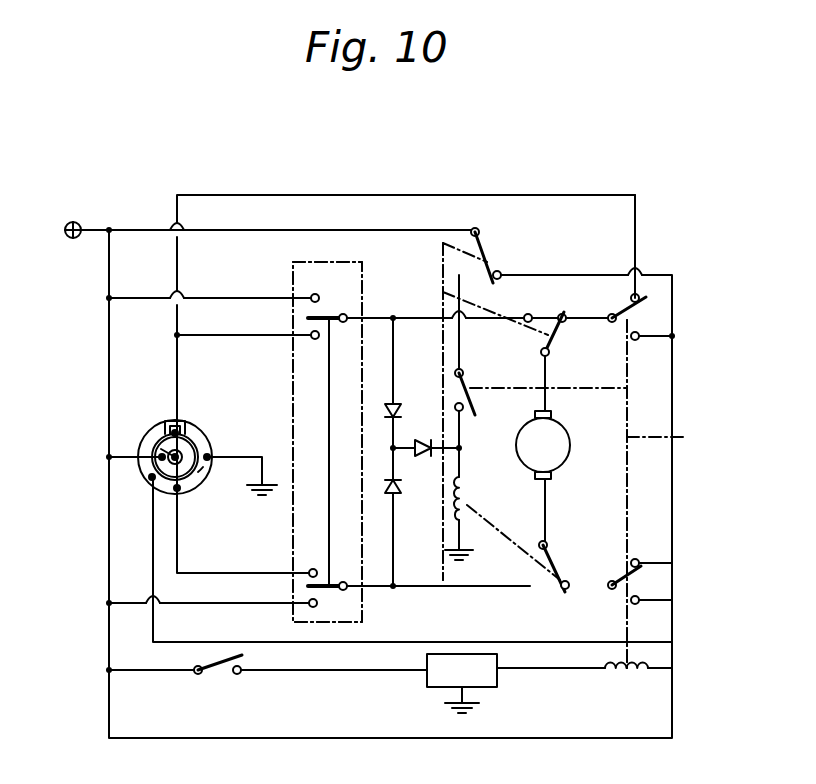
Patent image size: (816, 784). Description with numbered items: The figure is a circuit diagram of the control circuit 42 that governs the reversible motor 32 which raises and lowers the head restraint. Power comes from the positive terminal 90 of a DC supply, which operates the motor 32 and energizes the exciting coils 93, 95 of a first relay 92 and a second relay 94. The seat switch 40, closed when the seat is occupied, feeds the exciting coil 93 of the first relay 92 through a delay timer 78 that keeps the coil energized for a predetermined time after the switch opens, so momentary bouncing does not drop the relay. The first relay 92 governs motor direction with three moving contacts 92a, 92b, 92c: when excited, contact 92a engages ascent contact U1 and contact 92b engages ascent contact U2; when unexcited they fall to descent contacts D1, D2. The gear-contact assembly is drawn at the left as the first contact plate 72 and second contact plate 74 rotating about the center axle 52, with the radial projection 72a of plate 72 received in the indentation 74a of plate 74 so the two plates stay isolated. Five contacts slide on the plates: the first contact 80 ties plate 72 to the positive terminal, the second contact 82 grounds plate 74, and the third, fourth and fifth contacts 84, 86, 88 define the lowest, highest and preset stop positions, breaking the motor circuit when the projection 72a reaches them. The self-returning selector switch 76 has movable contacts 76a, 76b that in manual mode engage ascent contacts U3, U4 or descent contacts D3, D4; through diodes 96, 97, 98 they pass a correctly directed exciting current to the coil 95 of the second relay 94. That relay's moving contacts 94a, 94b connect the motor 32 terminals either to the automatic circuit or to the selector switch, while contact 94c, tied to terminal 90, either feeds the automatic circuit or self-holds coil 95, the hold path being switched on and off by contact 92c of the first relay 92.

The positive terminal 90 is at (73, 240).
The first contact 80 is at (140, 444).
The first contact plate 72 is at (200, 447).
The center axle 52 is at (185, 452).
The radial projection 72a is at (170, 424).
The radial indentation 74a is at (188, 430).
The third contact 84 is at (162, 450).
The second contact 82 is at (210, 462).
The fifth contact 88 is at (152, 480).
The fourth contact 86 is at (178, 491).
The second contact plate 74 is at (200, 478).
The selector switch 76 is at (362, 283).
The movable contact 76a is at (330, 316).
The movable contact 76b is at (326, 590).
The ascent contact U3 is at (312, 295).
The descent contact D3 is at (313, 339).
The ascent contact U4 is at (312, 569).
The descent contact D4 is at (310, 606).
The diode 96 is at (401, 414).
The diode 98 is at (424, 460).
The diode 97 is at (401, 495).
The exciting coil 95 is at (454, 510).
The second relay 94 is at (443, 378).
The first moving contact 94a is at (543, 342).
The second moving contact 94b is at (553, 565).
The moving contact 94c is at (488, 260).
The first relay 92 is at (627, 437).
The first moving contact 92a is at (620, 312).
The second moving contact 92b is at (625, 592).
The third moving contact 92c is at (470, 384).
The descent contact D1 is at (640, 298).
The ascent contact U1 is at (641, 340).
The descent contact D2 is at (638, 562).
The ascent contact U2 is at (640, 598).
The reversible motor 32 is at (566, 452).
The control circuit 42 is at (659, 260).
The seat switch 40 is at (232, 668).
The delay timer 78 is at (437, 686).
The exciting coil 93 is at (625, 680).